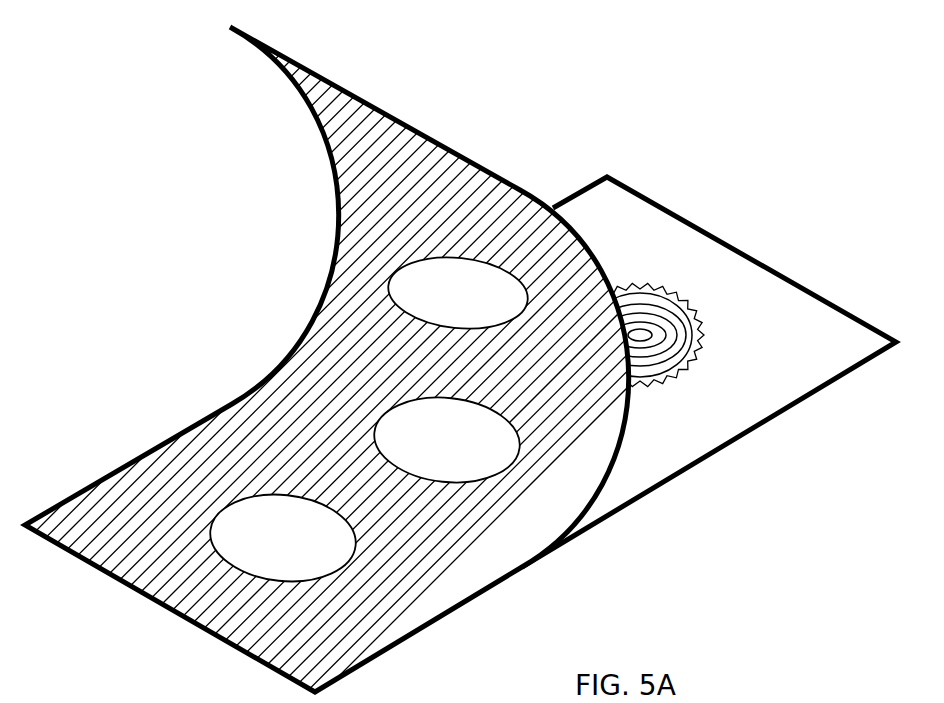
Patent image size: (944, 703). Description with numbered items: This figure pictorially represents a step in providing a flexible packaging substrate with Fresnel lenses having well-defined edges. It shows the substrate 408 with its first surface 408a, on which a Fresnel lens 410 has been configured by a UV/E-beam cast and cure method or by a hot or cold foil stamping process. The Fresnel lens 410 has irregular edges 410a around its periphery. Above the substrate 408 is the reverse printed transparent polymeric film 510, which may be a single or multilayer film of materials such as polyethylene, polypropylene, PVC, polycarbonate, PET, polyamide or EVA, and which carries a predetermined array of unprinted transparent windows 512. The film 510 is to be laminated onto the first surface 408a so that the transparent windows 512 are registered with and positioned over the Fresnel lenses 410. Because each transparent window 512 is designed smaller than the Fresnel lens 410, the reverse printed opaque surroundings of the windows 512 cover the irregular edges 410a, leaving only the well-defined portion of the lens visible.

The substrate 408 is at (709, 333).
The first surface 408a is at (617, 232).
The Fresnel lens 410 is at (734, 295).
The irregular edges 410a is at (663, 378).
The reverse printed transparent polymeric film 510 is at (472, 351).
The unprinted transparent windows 512 is at (410, 423).